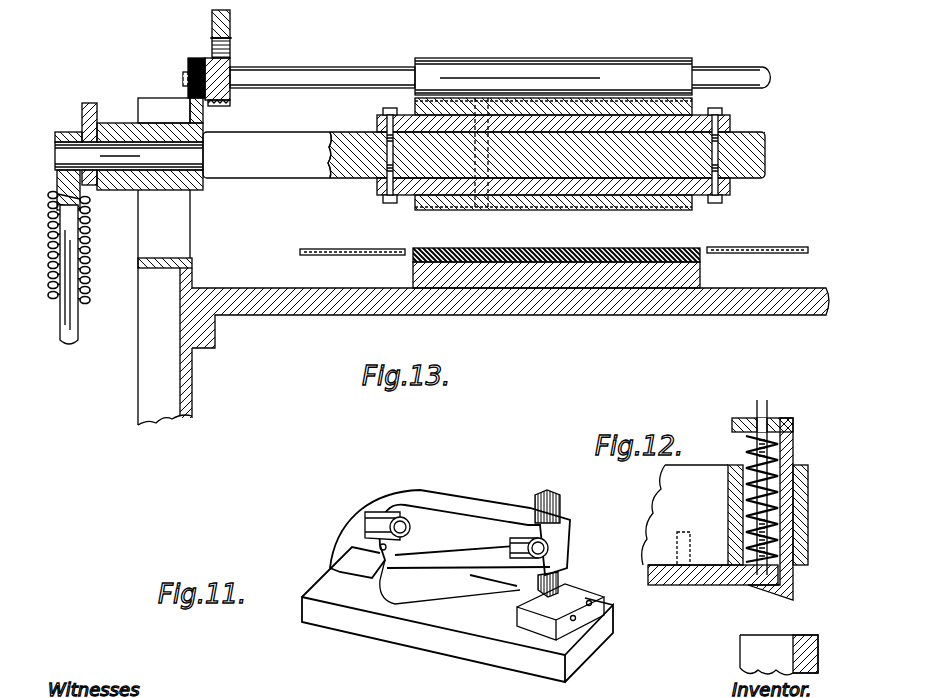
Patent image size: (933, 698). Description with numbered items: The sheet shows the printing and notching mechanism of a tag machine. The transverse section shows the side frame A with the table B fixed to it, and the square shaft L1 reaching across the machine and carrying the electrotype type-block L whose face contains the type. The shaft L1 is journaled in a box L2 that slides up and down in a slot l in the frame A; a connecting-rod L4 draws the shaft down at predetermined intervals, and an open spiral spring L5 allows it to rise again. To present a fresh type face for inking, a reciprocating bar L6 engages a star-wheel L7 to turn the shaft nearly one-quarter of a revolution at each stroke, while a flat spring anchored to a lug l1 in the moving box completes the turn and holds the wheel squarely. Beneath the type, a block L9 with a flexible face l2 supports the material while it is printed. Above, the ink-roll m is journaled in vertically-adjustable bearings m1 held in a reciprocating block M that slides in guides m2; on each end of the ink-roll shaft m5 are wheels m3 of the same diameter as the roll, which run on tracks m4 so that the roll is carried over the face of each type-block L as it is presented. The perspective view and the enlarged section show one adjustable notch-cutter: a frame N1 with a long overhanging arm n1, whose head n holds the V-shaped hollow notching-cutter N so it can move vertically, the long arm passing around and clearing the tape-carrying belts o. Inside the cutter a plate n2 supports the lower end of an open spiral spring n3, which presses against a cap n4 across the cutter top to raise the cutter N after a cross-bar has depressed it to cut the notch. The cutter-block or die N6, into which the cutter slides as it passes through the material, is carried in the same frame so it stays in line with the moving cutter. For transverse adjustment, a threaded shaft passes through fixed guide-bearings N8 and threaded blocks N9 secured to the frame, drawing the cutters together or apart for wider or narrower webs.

In FIG. 13, the square shaft L1 is at (275, 180).
In FIG. 13, the type-block L is at (692, 100).
In FIG. 13, the ink-roll m is at (625, 60).
In FIG. 13, the ink-roll shaft m5 is at (352, 70).
In FIG. 13, the reciprocating block M is at (232, 30).
In FIG. 13, the guide m2 is at (212, 22).
In FIG. 13, the vertically-adjustable bearing m1 is at (232, 60).
In FIG. 13, the wheel or roller m3 is at (188, 62).
In FIG. 13, the track m4 is at (205, 118).
In FIG. 13, the box L2 is at (118, 125).
In FIG. 13, the reciprocating bar L6 is at (82, 105).
In FIG. 13, the lug l1 is at (57, 172).
In FIG. 13, the star-wheel L7 is at (92, 180).
In FIG. 13, the open spiral spring L5 is at (50, 292).
In FIG. 13, the connecting-rod L4 is at (80, 322).
In FIG. 13, the slot l is at (147, 238).
In FIG. 13, the side frame A is at (192, 398).
In FIG. 13, the table B is at (560, 315).
In FIG. 13, the block L9 is at (690, 272).
In FIG. 13, the flexible face l2 is at (520, 250).
In FIG. 13, the tape-carrying belt o is at (358, 248).
In FIG. 12, the notching-cutter N is at (795, 587).
In FIG. 11, the notching-cutter N is at (560, 575).
In FIG. 12, the plate n2 is at (712, 588).
In FIG. 12, the cap n4 is at (778, 415).
In FIG. 12, the open spiral spring n3 is at (770, 470).
In FIG. 12, the cutter-block or die N6 is at (820, 656).
In FIG. 11, the cutter-block or die N6 is at (537, 620).
In FIG. 11, the frame N1 is at (420, 630).
In FIG. 11, the overhanging arm n1 is at (455, 518).
In FIG. 11, the threaded block N9 is at (365, 515).
In FIG. 11, the fixed guide-bearing N8 is at (520, 545).
In FIG. 11, the head n is at (565, 530).